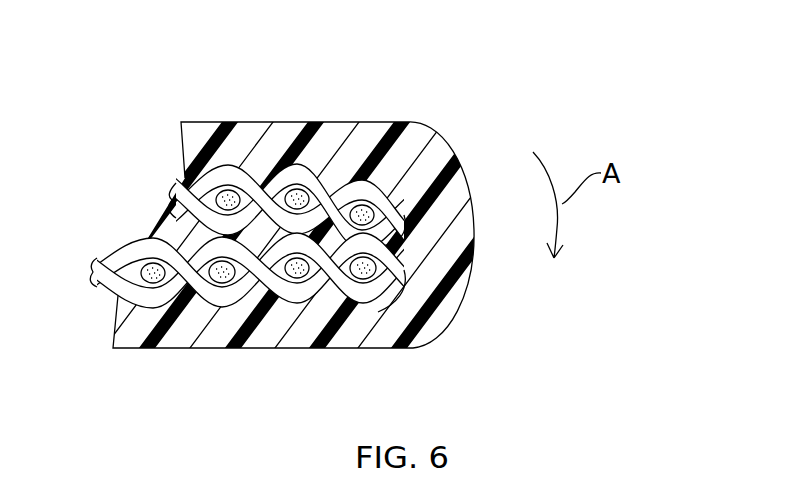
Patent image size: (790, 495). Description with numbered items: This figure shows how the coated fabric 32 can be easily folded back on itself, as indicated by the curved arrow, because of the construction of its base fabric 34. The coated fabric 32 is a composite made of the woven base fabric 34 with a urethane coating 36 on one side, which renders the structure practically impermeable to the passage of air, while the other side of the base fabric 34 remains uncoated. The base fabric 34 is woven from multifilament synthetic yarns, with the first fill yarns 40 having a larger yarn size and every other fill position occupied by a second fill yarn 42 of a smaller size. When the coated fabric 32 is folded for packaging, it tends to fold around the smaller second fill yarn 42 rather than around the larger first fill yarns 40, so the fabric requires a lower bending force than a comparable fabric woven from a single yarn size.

The coated fabric 32 is at (457, 97).
The base fabric 34 is at (151, 210).
The urethane coating 36 is at (283, 121).
The first fill yarns 40 is at (307, 121).
The second fill yarn 42 is at (398, 187).